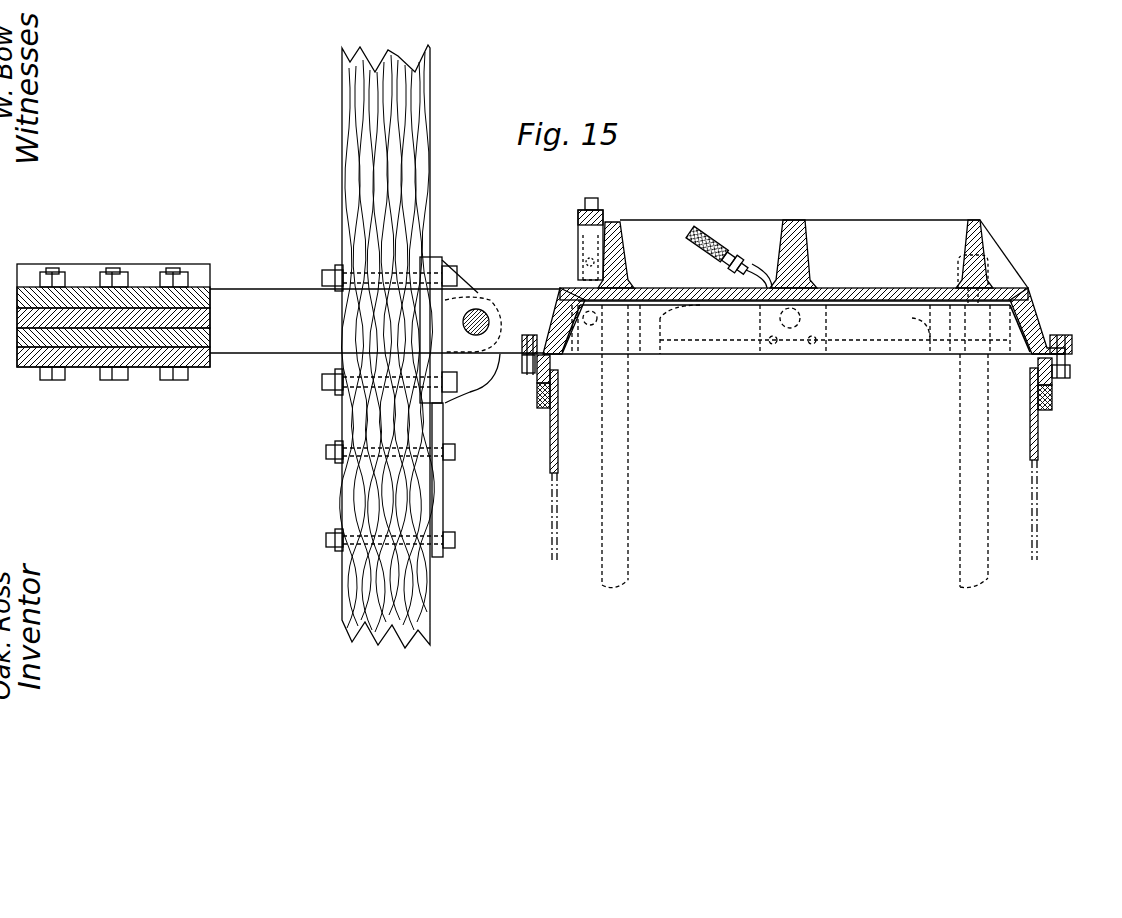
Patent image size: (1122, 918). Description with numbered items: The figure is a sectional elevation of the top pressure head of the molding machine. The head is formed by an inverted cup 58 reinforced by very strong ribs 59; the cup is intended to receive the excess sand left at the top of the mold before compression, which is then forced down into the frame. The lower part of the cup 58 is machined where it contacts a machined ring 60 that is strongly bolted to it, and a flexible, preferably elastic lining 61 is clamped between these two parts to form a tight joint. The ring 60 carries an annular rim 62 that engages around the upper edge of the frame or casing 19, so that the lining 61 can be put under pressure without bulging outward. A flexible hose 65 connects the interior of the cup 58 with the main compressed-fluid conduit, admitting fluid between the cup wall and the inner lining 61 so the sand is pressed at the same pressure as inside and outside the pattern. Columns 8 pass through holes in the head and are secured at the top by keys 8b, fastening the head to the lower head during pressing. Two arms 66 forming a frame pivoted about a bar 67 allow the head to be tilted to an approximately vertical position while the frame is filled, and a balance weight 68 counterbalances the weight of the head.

The columns 8 is at (640, 447).
The keys 8b is at (603, 280).
The frame or casing 19 is at (550, 449).
The upper pressure head or cover 58 is at (563, 292).
The ribs 59 is at (563, 287).
The machined ring 60 is at (527, 361).
The flexible lining 61 is at (560, 357).
The annular rim 62 is at (537, 386).
The flexible hose 65 is at (731, 212).
The arms 66 is at (251, 302).
The bar 67 is at (478, 316).
The balance weight 68 is at (156, 363).